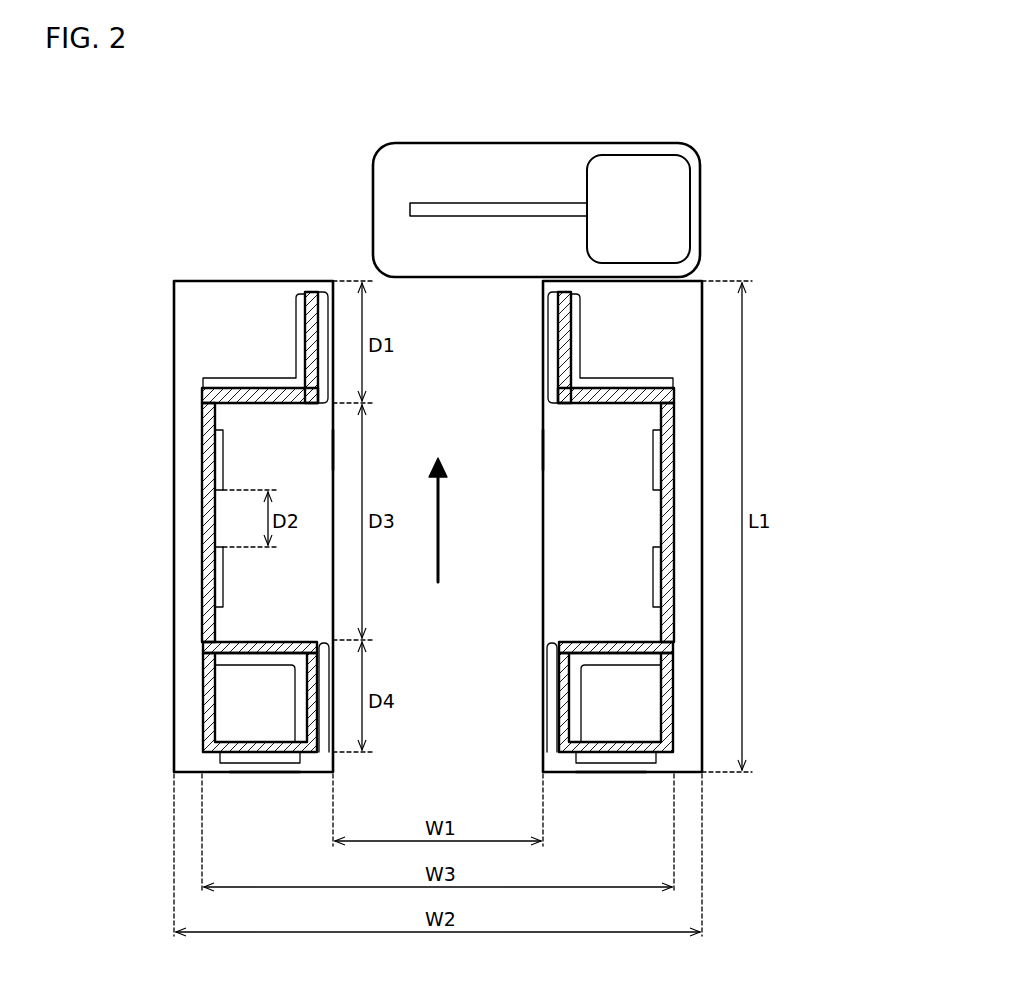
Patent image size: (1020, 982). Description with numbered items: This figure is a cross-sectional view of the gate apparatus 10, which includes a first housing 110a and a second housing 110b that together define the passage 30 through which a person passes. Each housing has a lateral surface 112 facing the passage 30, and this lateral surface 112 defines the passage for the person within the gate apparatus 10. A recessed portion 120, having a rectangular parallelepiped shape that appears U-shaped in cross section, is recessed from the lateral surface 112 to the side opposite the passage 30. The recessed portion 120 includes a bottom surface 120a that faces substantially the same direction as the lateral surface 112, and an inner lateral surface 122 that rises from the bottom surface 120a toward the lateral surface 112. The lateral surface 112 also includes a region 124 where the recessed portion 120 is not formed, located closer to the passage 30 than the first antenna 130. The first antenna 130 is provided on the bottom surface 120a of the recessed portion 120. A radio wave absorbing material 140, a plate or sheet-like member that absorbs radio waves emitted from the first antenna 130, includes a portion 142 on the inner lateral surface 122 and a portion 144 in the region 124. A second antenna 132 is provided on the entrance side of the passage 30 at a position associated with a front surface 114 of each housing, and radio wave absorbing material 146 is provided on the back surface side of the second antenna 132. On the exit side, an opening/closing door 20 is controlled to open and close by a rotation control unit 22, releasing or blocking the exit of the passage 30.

The gate apparatus 10 is at (298, 96).
The opening/closing door 20 is at (520, 205).
The rotation control unit 22 is at (645, 163).
The passage 30 is at (448, 700).
The first housing 110a is at (207, 333).
The second housing 110b is at (677, 333).
The lateral surface 112 is at (334, 455).
The front surface 114 is at (276, 775).
The recessed portion 120 is at (290, 589).
The bottom surface 120a is at (210, 640).
The inner lateral surface 122 is at (250, 360).
The region 124 is at (297, 300).
The first antenna 130 is at (214, 452).
The second antenna 132 is at (250, 756).
The radio wave absorbing material 140 is at (312, 296).
The portion of radio wave absorbing material 142 is at (317, 405).
The portion of radio wave absorbing material 144 is at (330, 346).
The radio wave absorbing material on back surface side of second antenna 146 is at (212, 703).